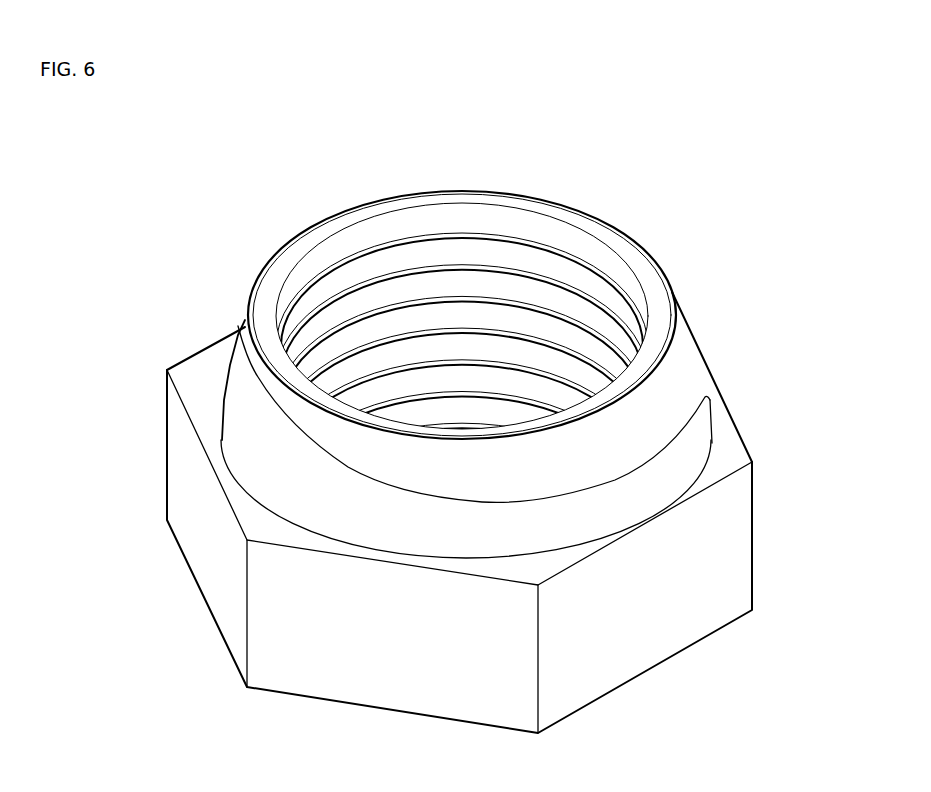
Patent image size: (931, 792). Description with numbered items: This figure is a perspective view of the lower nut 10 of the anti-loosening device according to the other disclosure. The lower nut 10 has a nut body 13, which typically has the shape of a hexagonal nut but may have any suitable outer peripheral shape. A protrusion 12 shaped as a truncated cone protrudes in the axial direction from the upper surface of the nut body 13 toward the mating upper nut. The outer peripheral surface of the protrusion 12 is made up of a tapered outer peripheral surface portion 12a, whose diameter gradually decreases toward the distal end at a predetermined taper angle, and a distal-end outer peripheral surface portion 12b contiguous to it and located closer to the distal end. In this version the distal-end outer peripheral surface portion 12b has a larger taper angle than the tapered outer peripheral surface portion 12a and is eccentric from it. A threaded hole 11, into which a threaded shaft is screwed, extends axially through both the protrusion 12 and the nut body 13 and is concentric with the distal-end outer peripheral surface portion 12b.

The lower nut 10 is at (249, 244).
The threaded hole 11 is at (565, 298).
The protrusion 12 is at (233, 353).
The tapered outer peripheral surface portion 12a is at (675, 457).
The distal-end outer peripheral surface portion 12b is at (678, 457).
The nut body 13 is at (703, 608).